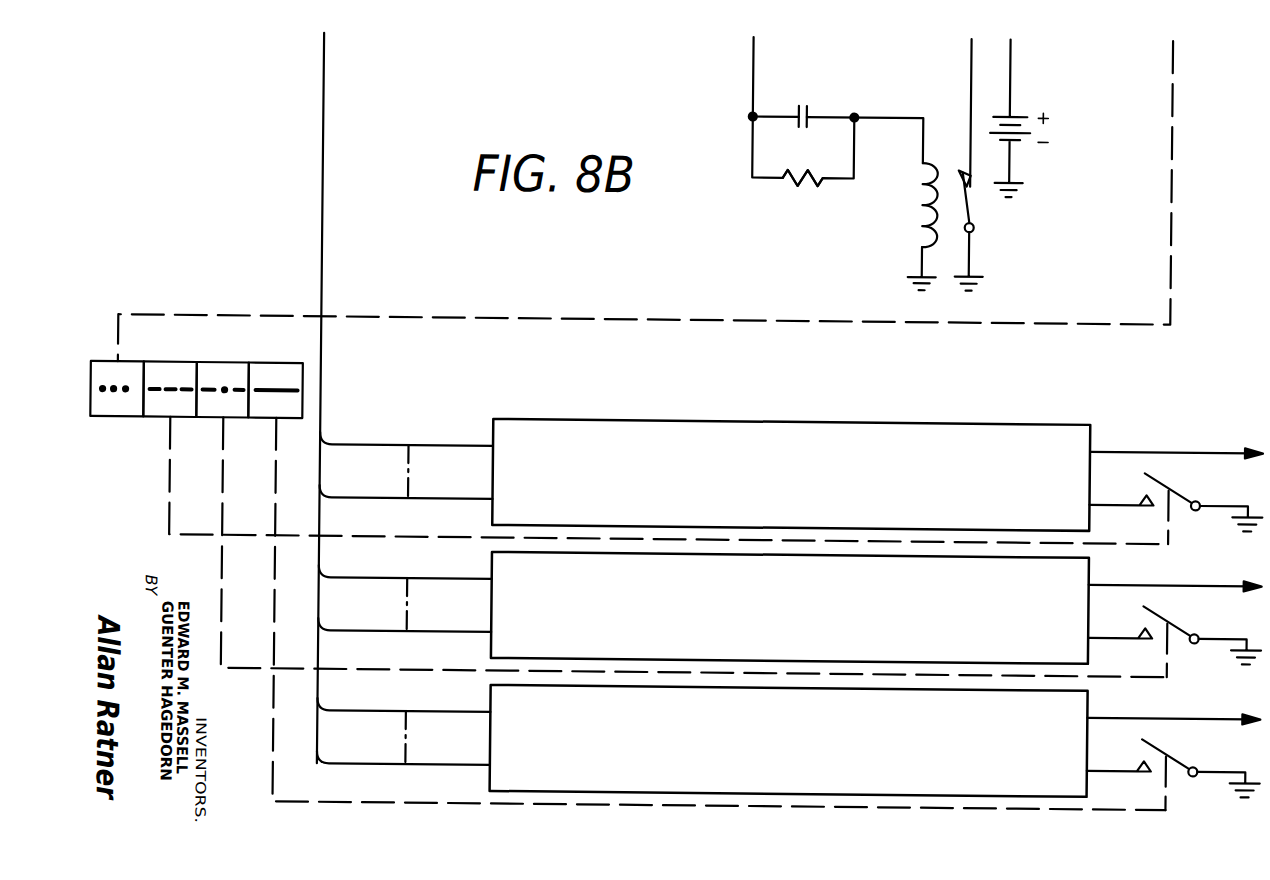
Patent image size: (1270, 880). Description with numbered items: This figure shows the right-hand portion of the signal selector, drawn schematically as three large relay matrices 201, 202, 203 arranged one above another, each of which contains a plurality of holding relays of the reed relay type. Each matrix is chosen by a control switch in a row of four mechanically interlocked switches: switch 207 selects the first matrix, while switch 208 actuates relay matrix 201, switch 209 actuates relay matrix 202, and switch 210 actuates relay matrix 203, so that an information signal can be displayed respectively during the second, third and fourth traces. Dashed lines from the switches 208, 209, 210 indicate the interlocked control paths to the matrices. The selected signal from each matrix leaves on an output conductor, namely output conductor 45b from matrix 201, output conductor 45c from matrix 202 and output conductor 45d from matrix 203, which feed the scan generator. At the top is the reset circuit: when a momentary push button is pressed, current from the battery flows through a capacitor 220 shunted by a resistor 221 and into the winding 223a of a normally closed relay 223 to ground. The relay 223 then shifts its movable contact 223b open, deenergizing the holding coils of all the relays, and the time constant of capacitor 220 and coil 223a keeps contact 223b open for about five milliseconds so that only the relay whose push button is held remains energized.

The relay matrix 201 is at (800, 485).
The relay matrix 202 is at (800, 618).
The relay matrix 203 is at (800, 751).
The switch 207 is at (116, 423).
The switch 208 is at (178, 367).
The switch 209 is at (228, 367).
The switch 210 is at (276, 367).
The capacitor 220 is at (808, 108).
The resistor 221 is at (809, 186).
The normally closed relay 223 is at (948, 164).
The winding 223a is at (917, 210).
The movable contact 223b is at (972, 210).
The output conductor 45b is at (1189, 442).
The output conductor 45c is at (1189, 575).
The output conductor 45d is at (1189, 708).